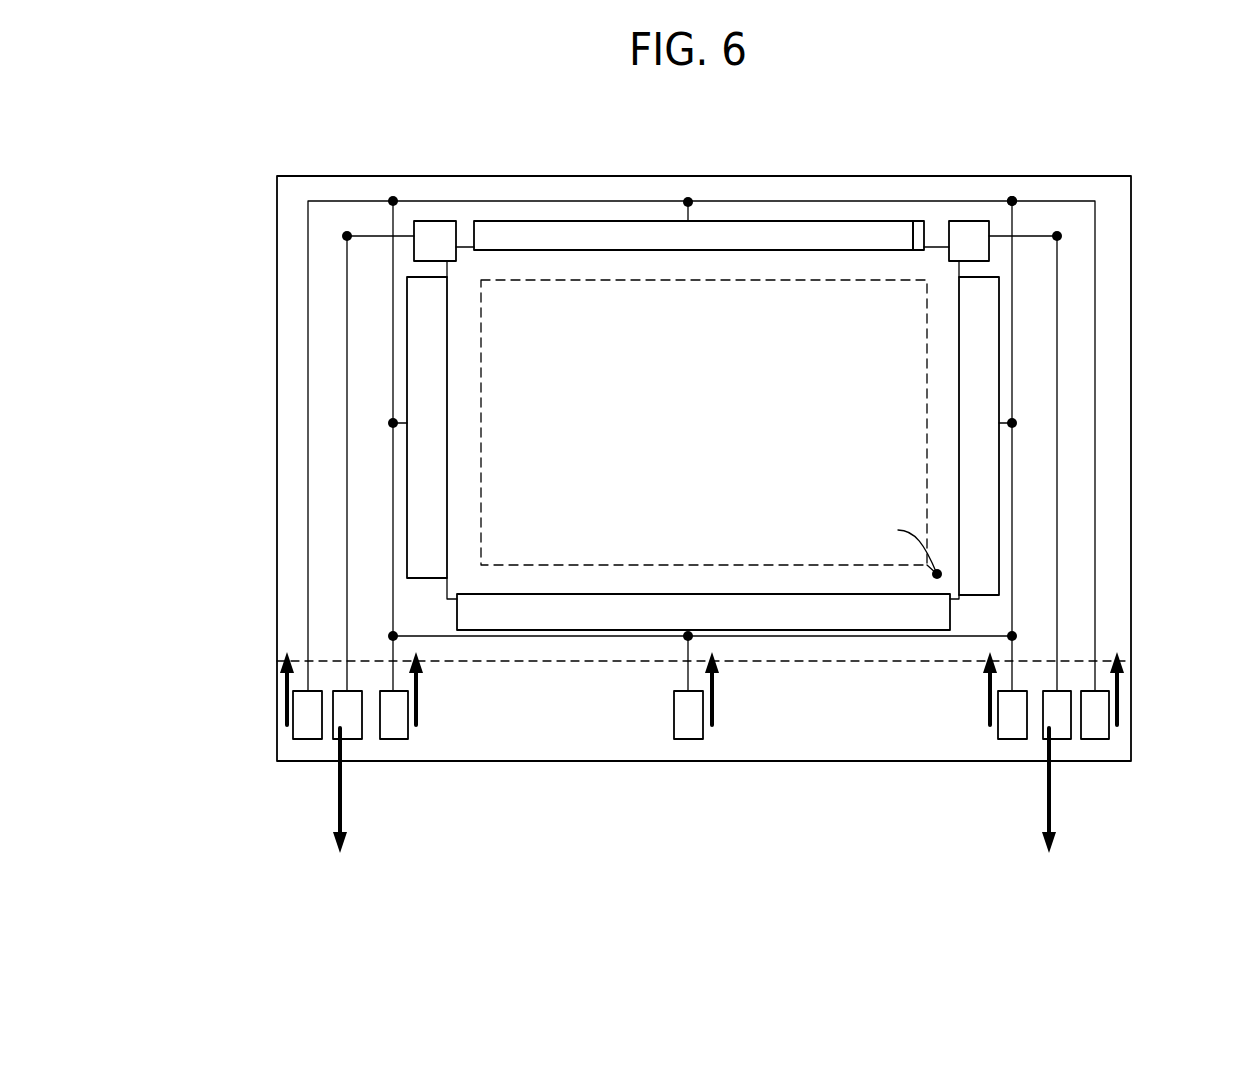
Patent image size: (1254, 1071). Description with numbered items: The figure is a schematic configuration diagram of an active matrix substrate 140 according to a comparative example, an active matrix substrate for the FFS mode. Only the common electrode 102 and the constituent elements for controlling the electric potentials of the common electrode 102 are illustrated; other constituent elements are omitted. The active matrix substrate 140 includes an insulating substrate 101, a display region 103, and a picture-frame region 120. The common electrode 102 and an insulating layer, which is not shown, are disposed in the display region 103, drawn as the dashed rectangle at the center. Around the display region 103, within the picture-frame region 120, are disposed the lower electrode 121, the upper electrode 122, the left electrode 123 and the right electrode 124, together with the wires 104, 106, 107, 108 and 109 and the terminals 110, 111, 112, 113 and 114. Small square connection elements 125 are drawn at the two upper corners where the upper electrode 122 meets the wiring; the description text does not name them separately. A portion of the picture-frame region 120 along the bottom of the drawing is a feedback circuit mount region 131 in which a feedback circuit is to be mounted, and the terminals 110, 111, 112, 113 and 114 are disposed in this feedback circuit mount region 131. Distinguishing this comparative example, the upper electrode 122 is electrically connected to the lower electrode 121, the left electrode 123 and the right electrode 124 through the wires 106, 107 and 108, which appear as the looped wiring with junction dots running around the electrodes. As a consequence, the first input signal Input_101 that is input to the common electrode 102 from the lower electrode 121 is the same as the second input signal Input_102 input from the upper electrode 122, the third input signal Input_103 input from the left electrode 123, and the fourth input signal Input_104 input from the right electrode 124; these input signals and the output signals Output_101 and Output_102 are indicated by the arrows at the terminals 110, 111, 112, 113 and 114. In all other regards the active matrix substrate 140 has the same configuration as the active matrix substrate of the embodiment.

The active matrix substrate 140 is at (270, 141).
The insulating substrate 101 is at (1065, 176).
The common electrode 102 is at (908, 258).
The display region 103 is at (815, 279).
The wire 104 is at (1014, 198).
The wire 106 is at (393, 378).
The wire 107 is at (1012, 377).
The wire 108 is at (688, 651).
The wire 109 is at (347, 468).
The terminal 110 is at (307, 740).
The terminal 111 is at (355, 740).
The terminal 112 is at (385, 740).
The terminal 113 is at (1013, 740).
The terminal 114 is at (690, 740).
The picture-frame region 120 is at (289, 201).
The lower electrode 121 is at (710, 607).
The upper electrode 122 is at (710, 235).
The left electrode 123 is at (447, 399).
The right electrode 124 is at (970, 400).
The connection pad 125 is at (433, 232).
The feedback circuit mount region 131 is at (510, 740).